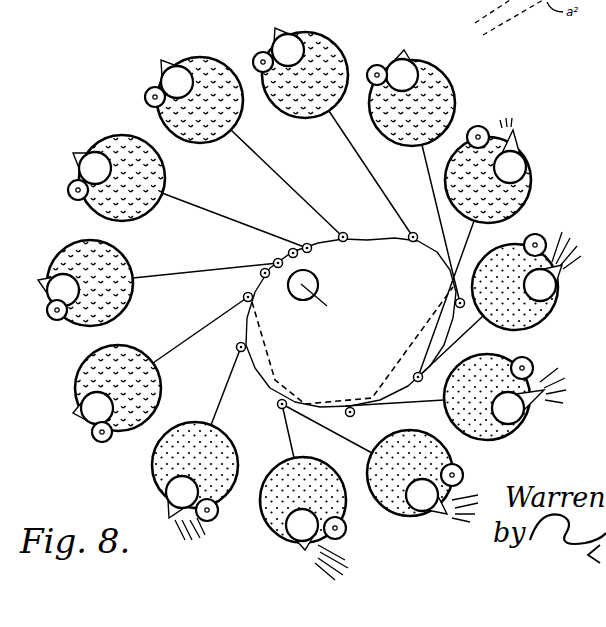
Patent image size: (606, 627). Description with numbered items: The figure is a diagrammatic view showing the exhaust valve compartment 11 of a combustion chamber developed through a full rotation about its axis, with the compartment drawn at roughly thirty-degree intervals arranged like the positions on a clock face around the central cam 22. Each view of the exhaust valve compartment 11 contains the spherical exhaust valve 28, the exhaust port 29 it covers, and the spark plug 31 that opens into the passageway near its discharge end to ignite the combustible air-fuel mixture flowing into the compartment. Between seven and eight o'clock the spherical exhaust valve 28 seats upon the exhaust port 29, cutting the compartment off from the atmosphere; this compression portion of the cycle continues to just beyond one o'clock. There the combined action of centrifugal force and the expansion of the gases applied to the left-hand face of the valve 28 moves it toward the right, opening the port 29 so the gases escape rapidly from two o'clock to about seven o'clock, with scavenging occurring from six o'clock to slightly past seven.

The exhaust valve compartment 11 is at (158, 113).
The cam 22 is at (375, 248).
The spherical exhaust valve 28 is at (173, 80).
The exhaust port 29 is at (162, 61).
The spark plug 31 is at (146, 93).